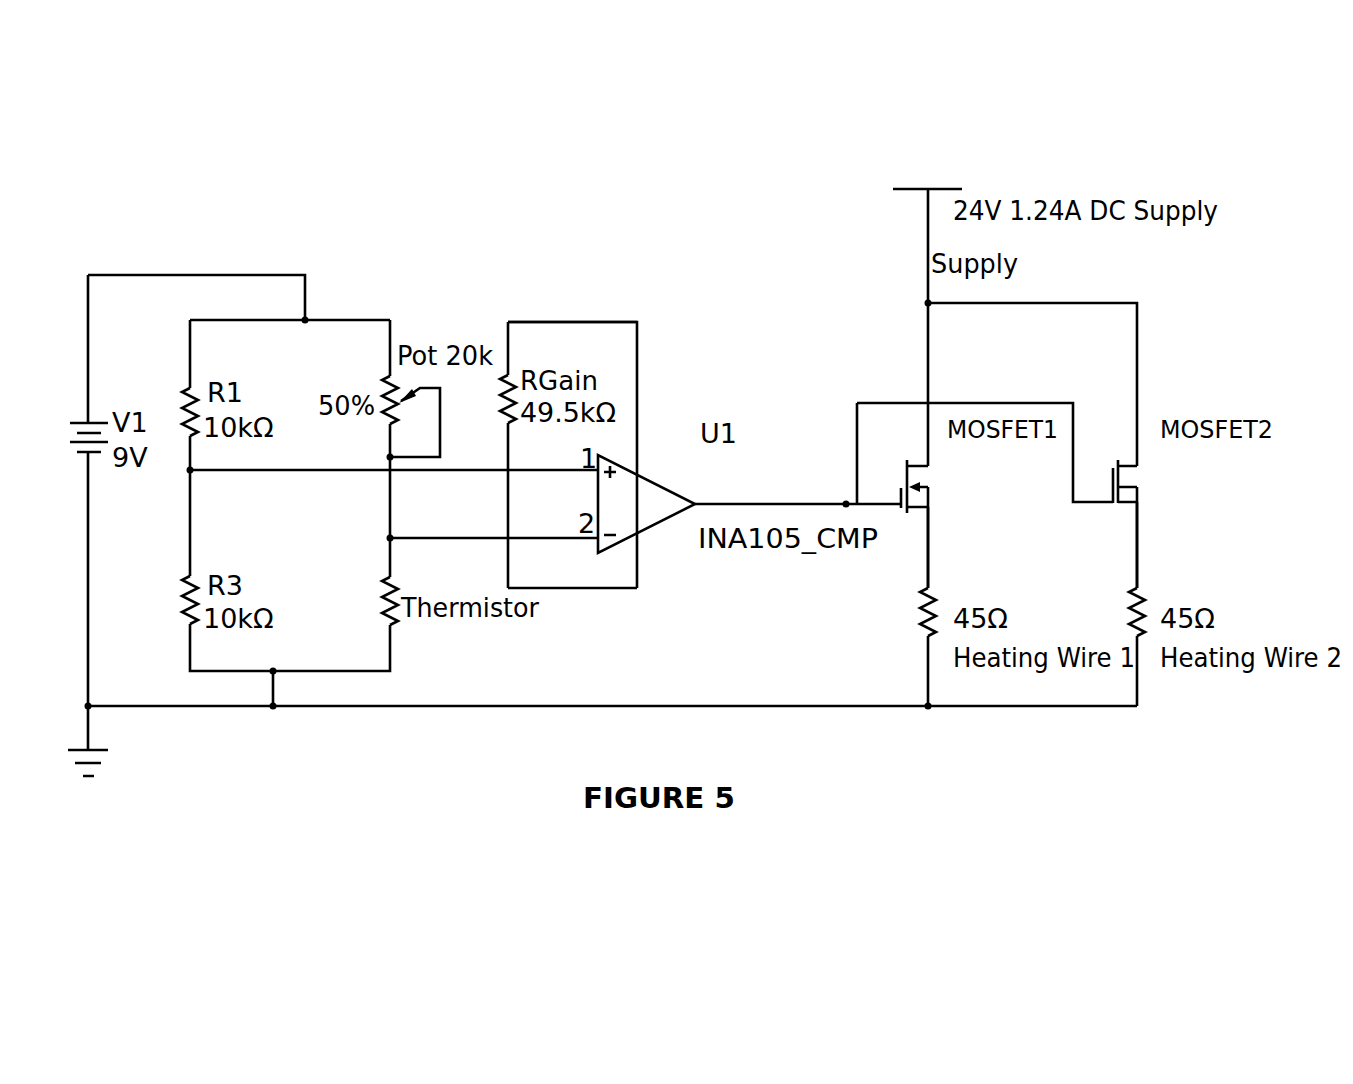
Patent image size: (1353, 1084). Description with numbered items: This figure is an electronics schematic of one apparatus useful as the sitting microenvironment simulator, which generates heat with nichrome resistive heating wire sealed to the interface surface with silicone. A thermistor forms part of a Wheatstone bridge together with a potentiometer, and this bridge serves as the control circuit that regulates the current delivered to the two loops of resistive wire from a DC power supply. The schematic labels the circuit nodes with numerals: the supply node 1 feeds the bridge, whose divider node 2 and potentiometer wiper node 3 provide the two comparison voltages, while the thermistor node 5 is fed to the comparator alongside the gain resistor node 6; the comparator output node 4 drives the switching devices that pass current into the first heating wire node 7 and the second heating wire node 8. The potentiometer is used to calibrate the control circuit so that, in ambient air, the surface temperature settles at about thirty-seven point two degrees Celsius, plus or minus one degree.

The battery positive supply net 1 is at (196, 279).
The bridge reference node (R1/R3 junction) to comparator non-inverting input 2 is at (393, 458).
The potentiometer wiper node 3 is at (414, 424).
The comparator output net to MOSFET gates 4 is at (798, 455).
The thermistor node to comparator inverting input 5 is at (493, 517).
The gain resistor RGain net 6 is at (572, 436).
The heating wire 1 net 7 is at (938, 571).
The heating wire 2 net 8 is at (1147, 569).